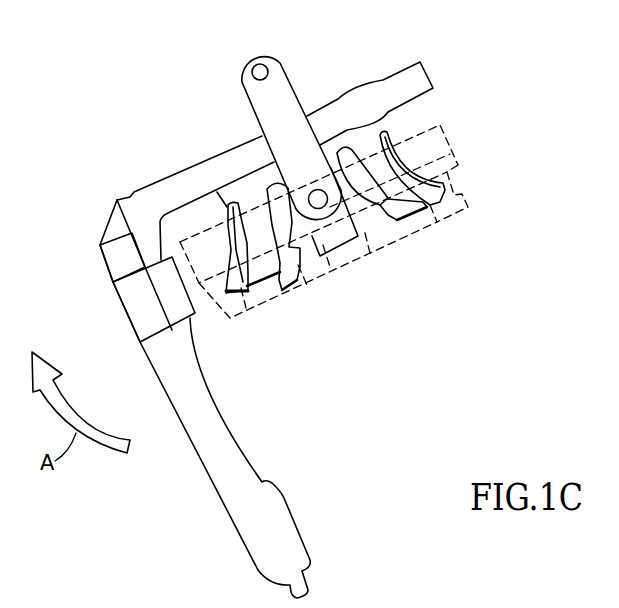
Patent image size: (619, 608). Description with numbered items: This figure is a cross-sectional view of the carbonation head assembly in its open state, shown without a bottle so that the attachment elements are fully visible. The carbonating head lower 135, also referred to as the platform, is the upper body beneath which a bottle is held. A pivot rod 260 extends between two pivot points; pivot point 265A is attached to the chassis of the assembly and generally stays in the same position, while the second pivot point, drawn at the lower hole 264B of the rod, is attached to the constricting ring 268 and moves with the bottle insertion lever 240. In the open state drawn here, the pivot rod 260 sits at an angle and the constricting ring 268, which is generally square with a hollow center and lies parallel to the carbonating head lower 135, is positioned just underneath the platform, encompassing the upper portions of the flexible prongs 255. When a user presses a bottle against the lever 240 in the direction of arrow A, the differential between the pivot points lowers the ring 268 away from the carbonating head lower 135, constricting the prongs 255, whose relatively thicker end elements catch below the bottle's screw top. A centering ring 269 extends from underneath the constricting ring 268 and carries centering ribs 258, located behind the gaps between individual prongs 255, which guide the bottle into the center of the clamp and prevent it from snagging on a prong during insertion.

The carbonating head lower 135 is at (421, 78).
The bottle insertion lever 240 is at (207, 470).
The flexible prongs 255 is at (343, 248).
The centering ribs 258 is at (381, 246).
The pivot rod 260 is at (298, 99).
The lower pivot hole 264B is at (318, 199).
The pivot point 265A is at (260, 72).
The constricting ring 268 is at (445, 133).
The centering ring 269 is at (454, 186).